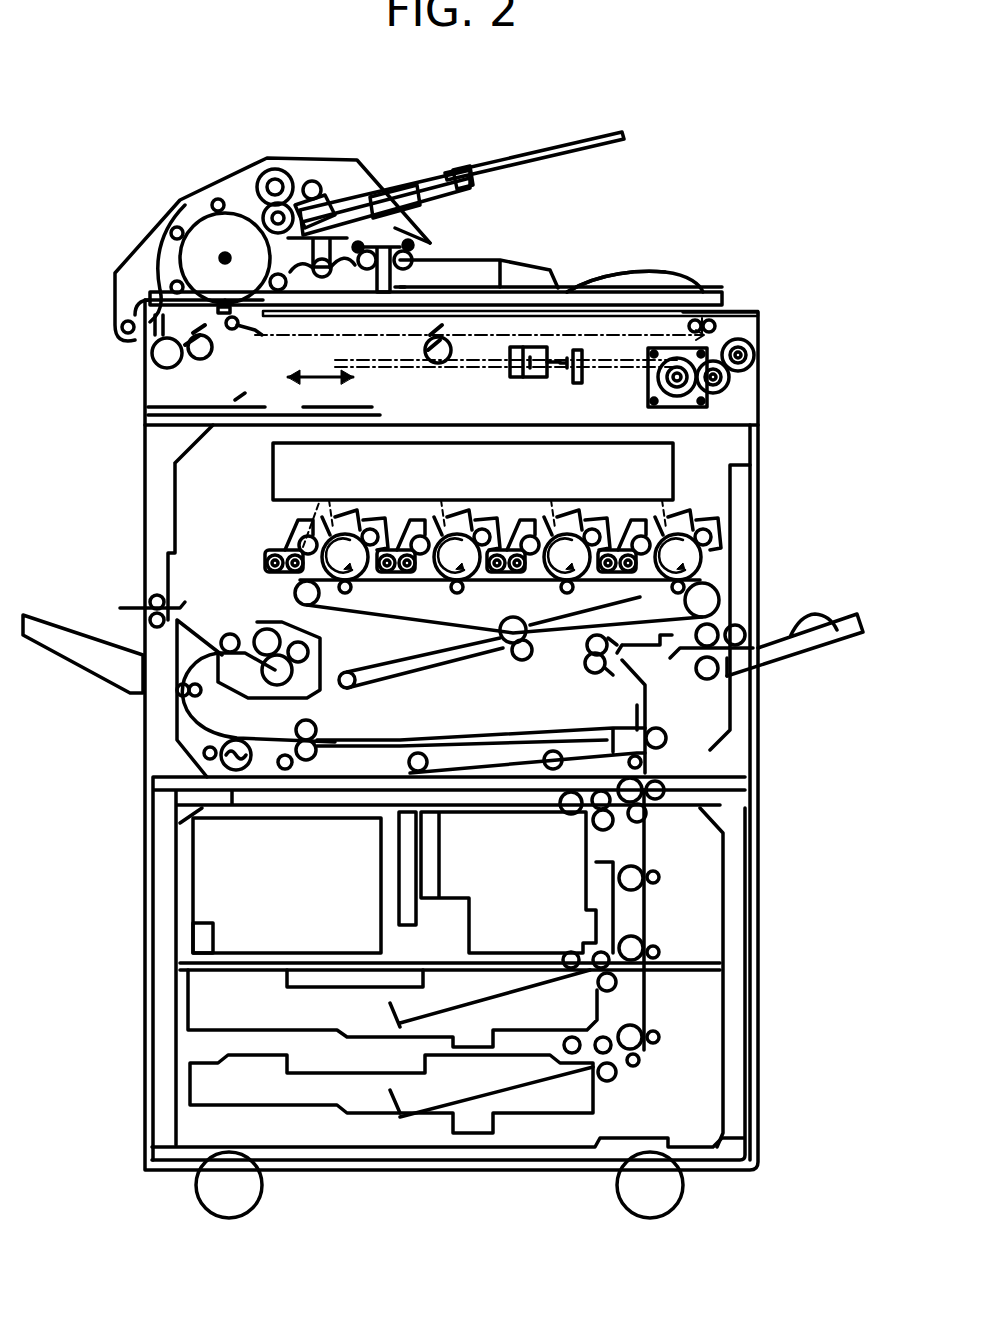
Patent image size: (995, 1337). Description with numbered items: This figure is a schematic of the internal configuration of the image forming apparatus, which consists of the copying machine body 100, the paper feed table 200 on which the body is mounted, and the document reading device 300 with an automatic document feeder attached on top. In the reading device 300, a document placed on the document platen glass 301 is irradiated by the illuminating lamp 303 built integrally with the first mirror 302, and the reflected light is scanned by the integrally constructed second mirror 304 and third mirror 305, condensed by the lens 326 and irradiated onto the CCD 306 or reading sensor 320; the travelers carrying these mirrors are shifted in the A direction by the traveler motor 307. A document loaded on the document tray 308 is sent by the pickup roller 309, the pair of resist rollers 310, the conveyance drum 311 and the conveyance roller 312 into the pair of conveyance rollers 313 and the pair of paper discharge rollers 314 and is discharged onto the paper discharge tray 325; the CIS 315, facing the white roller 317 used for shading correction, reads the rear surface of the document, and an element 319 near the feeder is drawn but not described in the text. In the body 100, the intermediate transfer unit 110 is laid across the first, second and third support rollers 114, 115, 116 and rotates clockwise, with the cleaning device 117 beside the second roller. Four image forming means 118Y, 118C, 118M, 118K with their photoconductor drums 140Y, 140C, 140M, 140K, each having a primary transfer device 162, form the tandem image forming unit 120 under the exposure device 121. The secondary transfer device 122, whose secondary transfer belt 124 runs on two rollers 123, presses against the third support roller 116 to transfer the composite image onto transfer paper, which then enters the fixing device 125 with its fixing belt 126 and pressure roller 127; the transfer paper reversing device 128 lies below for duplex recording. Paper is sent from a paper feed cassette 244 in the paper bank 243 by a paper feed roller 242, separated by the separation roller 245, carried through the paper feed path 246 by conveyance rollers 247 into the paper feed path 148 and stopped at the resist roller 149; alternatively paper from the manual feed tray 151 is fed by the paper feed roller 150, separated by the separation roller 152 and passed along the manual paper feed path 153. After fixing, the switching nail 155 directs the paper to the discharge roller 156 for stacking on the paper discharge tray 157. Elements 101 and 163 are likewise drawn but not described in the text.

The image forming apparatus body 100 is at (130, 492).
The recording medium 101 is at (612, 635).
The intermediate transfer unit 110 is at (350, 610).
The first support roller 114 is at (718, 598).
The second support roller 115 is at (312, 605).
The third support roller 116 is at (508, 643).
The intermediate transfer unit cleaning device 117 is at (265, 588).
The image forming means (yellow) 118Y is at (338, 510).
The image forming means (cyan) 118C is at (470, 515).
The image forming means (magenta) 118M is at (580, 515).
The image forming means (black) 118K is at (700, 502).
The tandem image forming unit 120 is at (272, 518).
The exposure device 121 is at (675, 462).
The secondary transfer device 122 is at (535, 645).
The rollers 123 is at (522, 660).
The secondary transfer belt 124 is at (430, 668).
The fixing device 125 is at (248, 684).
The fixing belt 126 is at (275, 618).
The pressure roller 127 is at (290, 682).
The transfer paper reversing device 128 is at (455, 763).
The photoconductor drum (yellow) 140Y is at (332, 535).
The photoconductor drum (cyan) 140C is at (445, 535).
The photoconductor drum (magenta) 140M is at (555, 535).
The photoconductor drum (black) 140K is at (700, 555).
The paper feed path 148 is at (667, 738).
The resist roller 149 is at (620, 664).
The paper feed roller 150 is at (746, 635).
The manual feed tray 151 is at (800, 652).
The separation roller 152 is at (707, 680).
The manual paper feed path 153 is at (635, 655).
The switching nail 155 is at (267, 657).
The discharge roller 156 is at (150, 600).
The paper discharge tray 157 is at (65, 633).
The primary transfer device 162 is at (350, 590).
The charging device 163 is at (375, 512).
The paper feed table 200 is at (130, 882).
The paper feed roller 242 is at (566, 814).
The paper bank 243 is at (178, 1025).
The paper feed cassette 244 is at (235, 985).
The separation roller 245 is at (590, 825).
The paper feed path 246 is at (648, 905).
The conveyance rollers 247 is at (655, 800).
The document reading device 300 is at (630, 185).
The document platen glass 301 is at (325, 322).
The first mirror 302 is at (234, 330).
The illuminating lamp 303 is at (260, 331).
The second mirror 304 is at (190, 332).
The third mirror 305 is at (160, 362).
The CCD 306 is at (578, 340).
The traveler motor 307 is at (668, 345).
The document tray 308 is at (480, 170).
The pickup roller 309 is at (314, 181).
The pair of resist rollers 310 is at (276, 169).
The conveyance drum 311 is at (228, 190).
The conveyance roller 312 is at (172, 286).
The pair of conveyance rollers 313 is at (362, 237).
The pair of paper discharge rollers 314 is at (440, 240).
The CIS 315 is at (262, 238).
The white roller 317 is at (270, 279).
The feed guide 319 is at (435, 240).
The reading sensor (CCD) 320 is at (584, 366).
The paper discharge tray 325 is at (505, 260).
The lens 326 is at (530, 378).
The A direction A is at (340, 386).